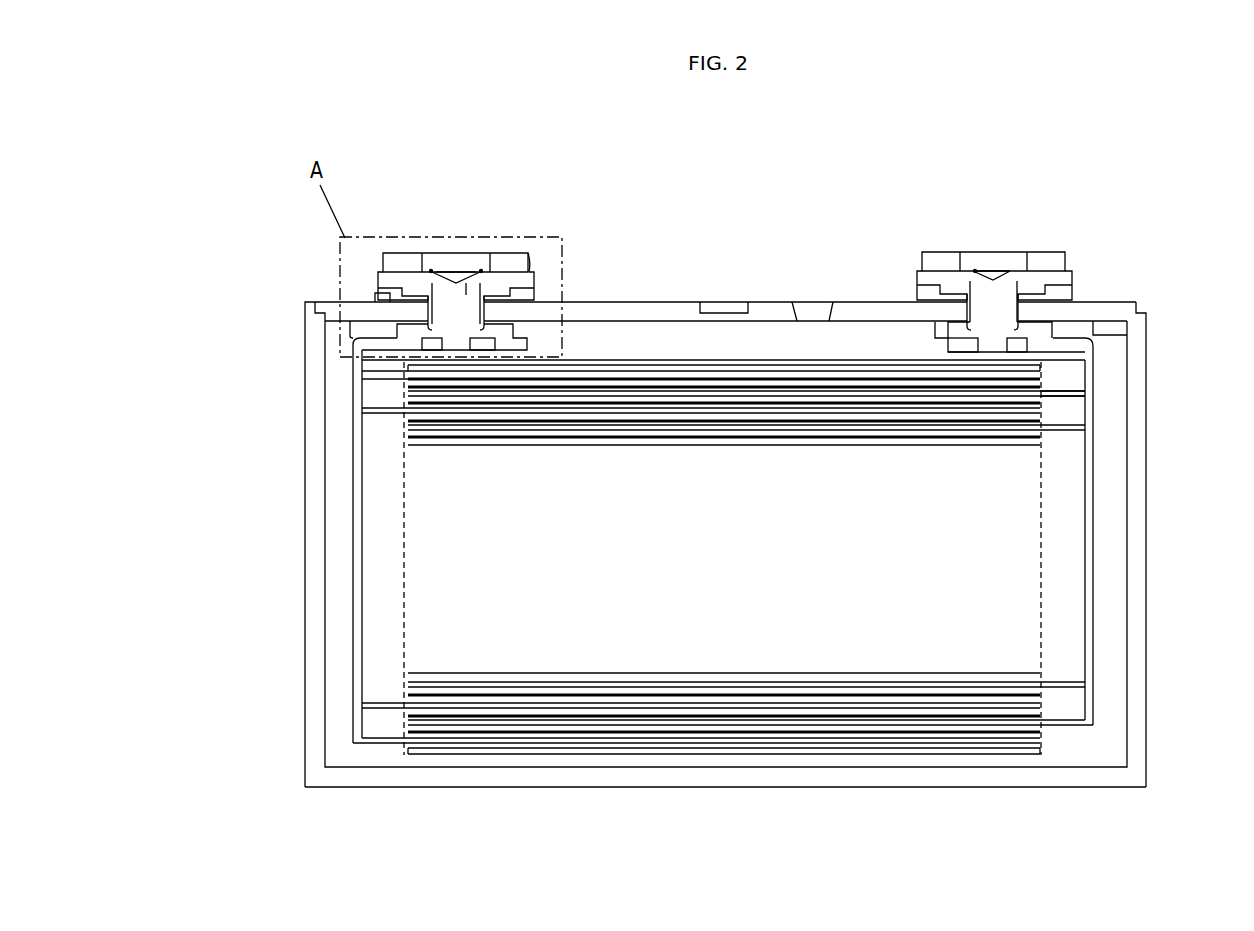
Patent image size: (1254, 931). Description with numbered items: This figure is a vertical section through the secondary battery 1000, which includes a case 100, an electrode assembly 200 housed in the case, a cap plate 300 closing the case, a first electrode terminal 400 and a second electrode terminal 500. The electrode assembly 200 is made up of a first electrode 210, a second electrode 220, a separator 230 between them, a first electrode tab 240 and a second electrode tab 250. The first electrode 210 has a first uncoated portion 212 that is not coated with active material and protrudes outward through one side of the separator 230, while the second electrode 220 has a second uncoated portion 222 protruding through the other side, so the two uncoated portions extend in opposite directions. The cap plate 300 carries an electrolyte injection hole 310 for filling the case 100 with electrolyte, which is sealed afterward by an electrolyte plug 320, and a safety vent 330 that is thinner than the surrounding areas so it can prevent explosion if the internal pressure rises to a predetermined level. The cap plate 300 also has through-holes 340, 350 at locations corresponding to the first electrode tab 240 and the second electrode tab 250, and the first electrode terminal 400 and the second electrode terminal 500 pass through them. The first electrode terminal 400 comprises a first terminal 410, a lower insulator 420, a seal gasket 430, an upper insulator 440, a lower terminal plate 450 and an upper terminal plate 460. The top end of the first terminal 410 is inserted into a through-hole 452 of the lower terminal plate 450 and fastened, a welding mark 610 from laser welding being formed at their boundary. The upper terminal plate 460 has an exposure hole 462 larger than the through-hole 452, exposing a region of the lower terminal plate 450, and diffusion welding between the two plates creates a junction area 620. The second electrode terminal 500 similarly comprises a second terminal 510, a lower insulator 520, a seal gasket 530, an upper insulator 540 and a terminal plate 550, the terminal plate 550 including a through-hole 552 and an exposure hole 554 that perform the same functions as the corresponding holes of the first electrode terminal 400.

The secondary battery 1000 is at (282, 178).
The case 100 is at (1140, 527).
The electrode assembly 200 is at (724, 546).
The first electrode 210 is at (598, 425).
The first uncoated portion 212 is at (384, 421).
The second electrode 220 is at (660, 432).
The second uncoated portion 222 is at (1070, 437).
The separator 230 is at (720, 440).
The first electrode tab 240 is at (353, 590).
The second electrode tab 250 is at (1093, 600).
The cap plate 300 is at (676, 301).
The electrolyte injection hole 310 is at (795, 301).
The electrolyte plug 320 is at (817, 301).
The safety vent 330 is at (723, 301).
The through-hole 340 is at (440, 270).
The through-hole 350 is at (1012, 272).
The first electrode terminal 400 is at (536, 247).
The first terminal 410 is at (452, 285).
The lower insulator 420 is at (352, 332).
The seal gasket 430 is at (407, 282).
The upper insulator 440 is at (505, 297).
The lower terminal plate 450 is at (403, 278).
The through-hole 452 is at (470, 270).
The upper terminal plate 460 is at (490, 258).
The exposure hole 462 is at (481, 270).
The second electrode terminal 500 is at (1031, 260).
The second terminal 510 is at (996, 287).
The lower insulator 520 is at (1093, 330).
The seal gasket 530 is at (1032, 320).
The upper insulator 540 is at (1068, 283).
The terminal plate 550 is at (1040, 257).
The through-hole 552 is at (977, 272).
The exposure hole 554 is at (963, 258).
The welding mark 610 is at (430, 268).
The junction area 620 is at (520, 268).